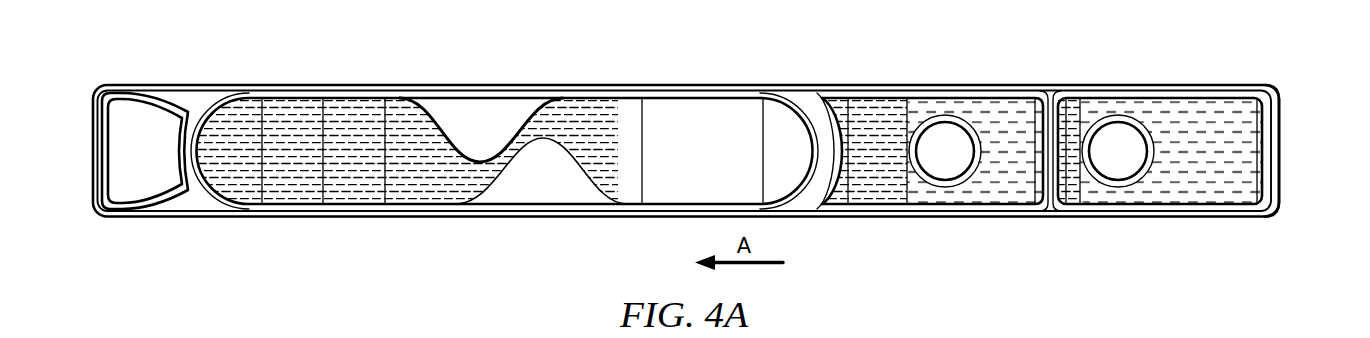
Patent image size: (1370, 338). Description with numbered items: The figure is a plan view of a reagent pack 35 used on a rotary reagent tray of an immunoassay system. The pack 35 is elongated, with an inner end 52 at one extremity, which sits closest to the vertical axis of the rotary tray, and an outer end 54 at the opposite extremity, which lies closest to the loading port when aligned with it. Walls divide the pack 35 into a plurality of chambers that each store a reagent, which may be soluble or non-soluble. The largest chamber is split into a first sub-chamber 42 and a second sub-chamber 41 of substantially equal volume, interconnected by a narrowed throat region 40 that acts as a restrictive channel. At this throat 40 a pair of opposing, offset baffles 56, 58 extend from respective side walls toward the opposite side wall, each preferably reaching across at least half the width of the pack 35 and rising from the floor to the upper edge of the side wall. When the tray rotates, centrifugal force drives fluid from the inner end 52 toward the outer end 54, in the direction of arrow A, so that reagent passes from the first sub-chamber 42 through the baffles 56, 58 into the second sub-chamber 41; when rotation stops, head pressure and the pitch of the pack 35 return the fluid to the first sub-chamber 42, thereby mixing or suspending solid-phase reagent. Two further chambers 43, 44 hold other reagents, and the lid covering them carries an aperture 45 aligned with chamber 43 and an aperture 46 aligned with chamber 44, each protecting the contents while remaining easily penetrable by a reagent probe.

The reagent pack 35 is at (274, 53).
The narrowed throat region 40 is at (495, 228).
The second sub-chamber 41 is at (347, 117).
The first sub-chamber 42 is at (709, 118).
The chamber 43 is at (932, 125).
The chamber 44 is at (1157, 125).
The aperture 45 is at (932, 164).
The aperture 46 is at (1105, 164).
The inner end 52 is at (1290, 144).
The outer end 54 is at (80, 143).
The baffle 56 is at (548, 187).
The baffle 58 is at (478, 117).